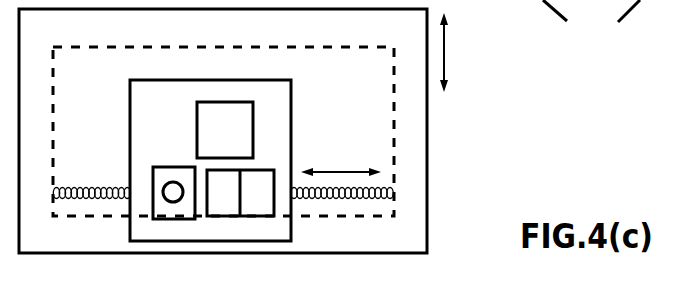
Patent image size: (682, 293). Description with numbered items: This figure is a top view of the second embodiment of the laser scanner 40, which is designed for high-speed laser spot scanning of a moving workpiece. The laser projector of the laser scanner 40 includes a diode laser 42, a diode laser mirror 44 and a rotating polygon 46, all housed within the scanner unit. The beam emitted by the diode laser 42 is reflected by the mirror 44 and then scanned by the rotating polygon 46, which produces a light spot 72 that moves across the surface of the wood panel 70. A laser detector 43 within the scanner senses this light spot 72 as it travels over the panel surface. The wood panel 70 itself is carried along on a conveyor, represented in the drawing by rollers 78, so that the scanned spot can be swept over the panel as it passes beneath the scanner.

The laser scanner 40 is at (291, 107).
The diode laser 42 is at (181, 185).
The laser detector 43 is at (225, 130).
The diode laser mirror 44 is at (158, 167).
The rotating polygon 46 is at (240, 193).
The wood panel 70 is at (413, 107).
The light spot 72 is at (394, 193).
The rollers 78 is at (591, 22).